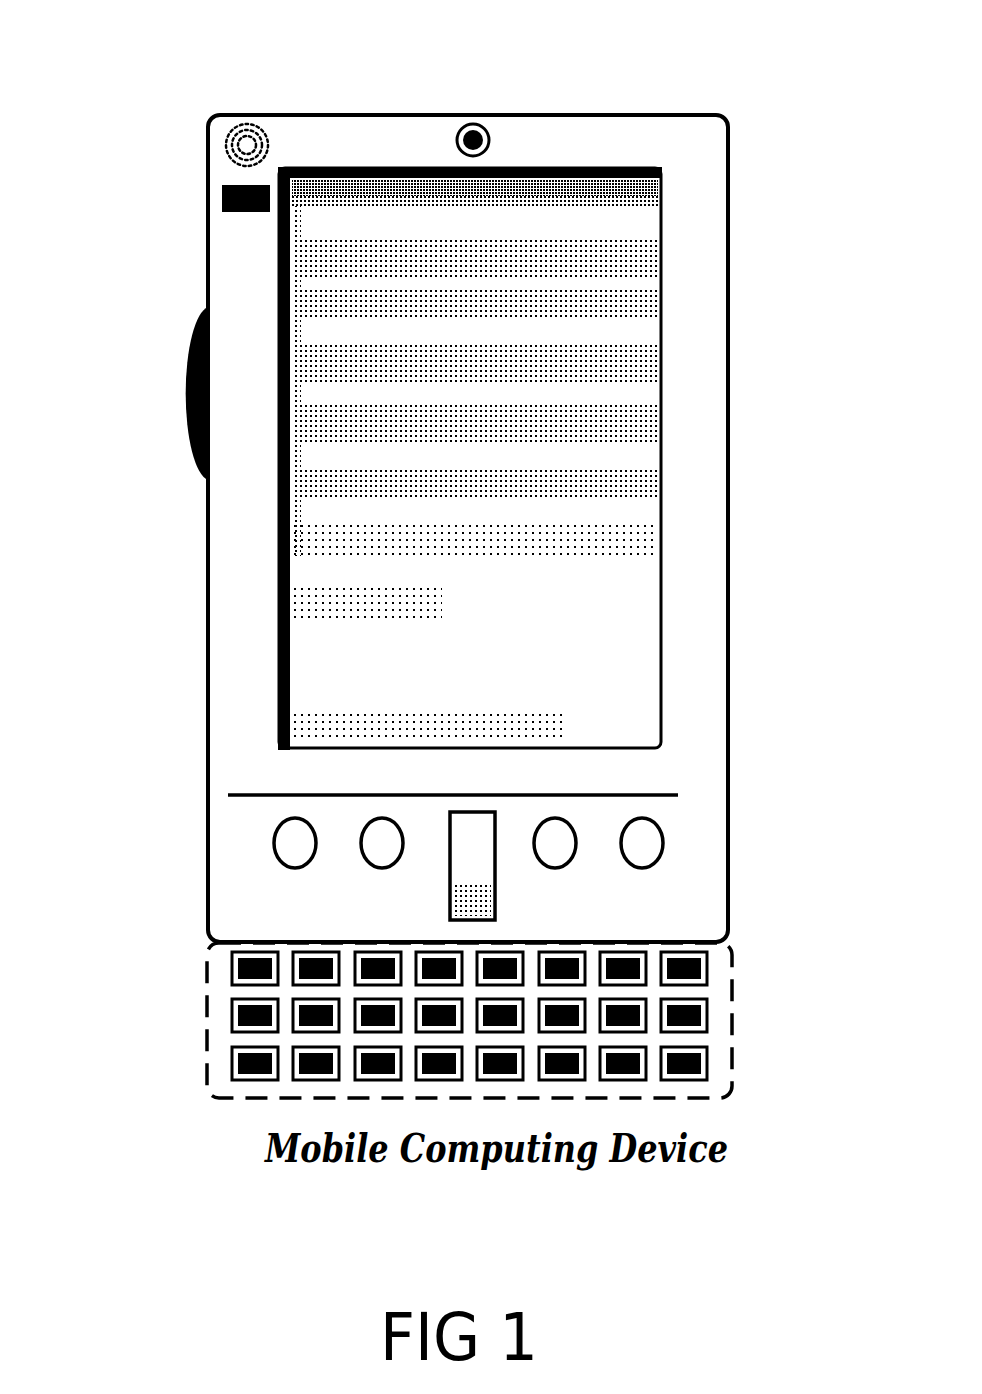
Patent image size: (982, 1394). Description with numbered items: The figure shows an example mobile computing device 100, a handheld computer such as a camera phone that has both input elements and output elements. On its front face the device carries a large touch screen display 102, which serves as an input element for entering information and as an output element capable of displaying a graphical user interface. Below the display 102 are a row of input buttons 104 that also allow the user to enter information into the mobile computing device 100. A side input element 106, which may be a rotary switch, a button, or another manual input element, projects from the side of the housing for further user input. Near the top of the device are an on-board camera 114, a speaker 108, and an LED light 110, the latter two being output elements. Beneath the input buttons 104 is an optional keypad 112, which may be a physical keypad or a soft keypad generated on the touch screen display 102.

The mobile computing device 100 is at (728, 133).
The touch screen display 102 is at (315, 665).
The input buttons 104 is at (647, 857).
The side input element 106 is at (185, 362).
The speaker 108 is at (223, 143).
The LED light 110 is at (222, 197).
The optional keypad 112 is at (205, 1057).
The on-board camera 114 is at (490, 128).